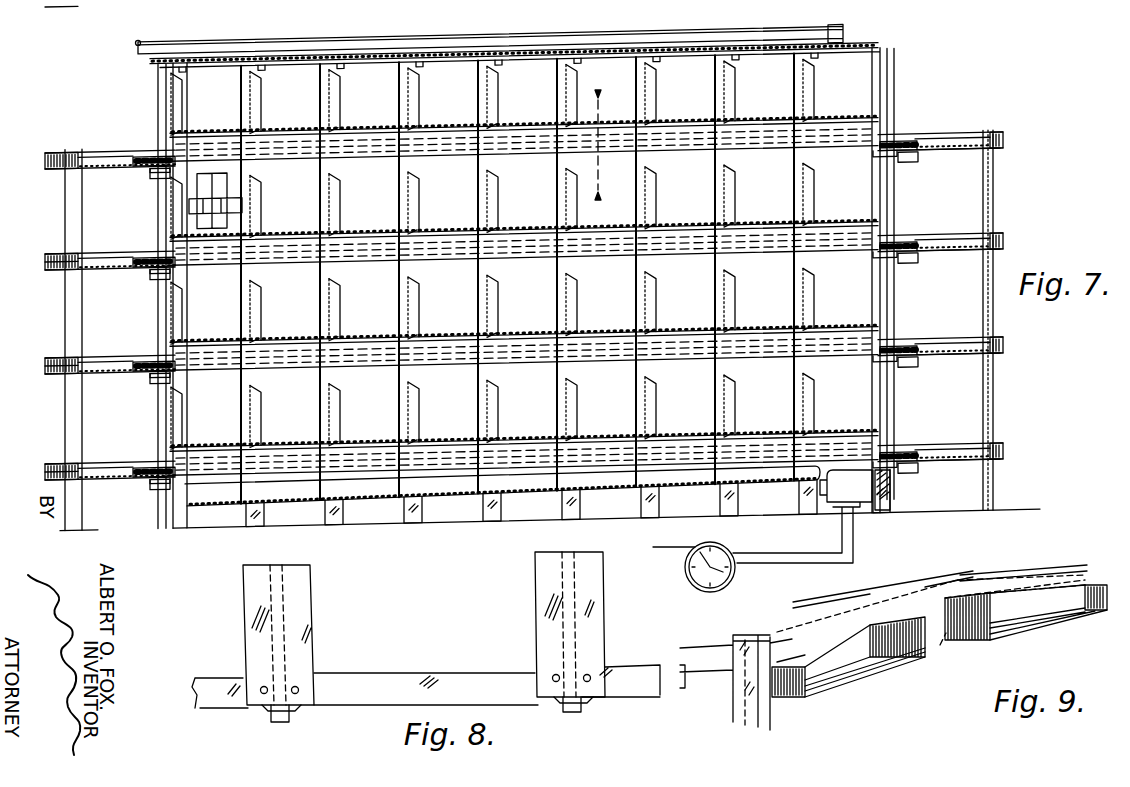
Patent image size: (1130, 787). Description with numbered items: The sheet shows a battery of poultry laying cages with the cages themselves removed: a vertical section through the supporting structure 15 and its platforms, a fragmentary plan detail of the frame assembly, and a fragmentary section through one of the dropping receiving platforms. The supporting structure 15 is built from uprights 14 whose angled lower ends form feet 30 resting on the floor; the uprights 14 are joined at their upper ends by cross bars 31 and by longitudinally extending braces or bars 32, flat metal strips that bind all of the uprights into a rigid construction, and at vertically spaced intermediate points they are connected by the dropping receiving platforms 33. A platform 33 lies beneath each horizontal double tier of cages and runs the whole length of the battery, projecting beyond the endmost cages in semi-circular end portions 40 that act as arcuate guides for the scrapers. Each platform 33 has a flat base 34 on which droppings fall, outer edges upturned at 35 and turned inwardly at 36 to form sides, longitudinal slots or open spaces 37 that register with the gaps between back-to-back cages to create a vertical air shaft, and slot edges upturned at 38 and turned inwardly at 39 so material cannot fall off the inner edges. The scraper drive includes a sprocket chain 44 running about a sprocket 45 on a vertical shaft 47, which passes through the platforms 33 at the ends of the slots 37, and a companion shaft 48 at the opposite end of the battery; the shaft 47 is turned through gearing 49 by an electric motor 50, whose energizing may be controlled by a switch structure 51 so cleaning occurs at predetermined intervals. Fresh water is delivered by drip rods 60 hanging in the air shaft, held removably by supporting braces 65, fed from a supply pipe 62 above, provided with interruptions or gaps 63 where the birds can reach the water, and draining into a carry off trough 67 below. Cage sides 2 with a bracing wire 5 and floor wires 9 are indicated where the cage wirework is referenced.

In FIG. 7, the sides 2 is at (345, 425).
In FIG. 7, the bracing wire 5 is at (792, 96).
In FIG. 7, the spaced wires 9 is at (597, 143).
In FIG. 7, the uprights 14 is at (416, 160).
In FIG. 8, the uprights 14 is at (292, 716).
In FIG. 9, the uprights 14 is at (740, 712).
In FIG. 7, the supporting structure 15 is at (408, 518).
In FIG. 8, the supporting structure 15 is at (326, 641).
In FIG. 7, the feet 30 is at (96, 532).
In FIG. 8, the cross bars 31 is at (306, 602).
In FIG. 7, the longitudinally extending braces or bars 32 is at (228, 66).
In FIG. 8, the longitudinally extending braces or bars 32 is at (393, 678).
In FIG. 7, the dropping receiving platforms 33 is at (528, 152).
In FIG. 9, the dropping receiving platforms 33 is at (870, 696).
In FIG. 9, the flat base 34 is at (855, 685).
In FIG. 7, the upturned outer edges 35 is at (966, 134).
In FIG. 9, the upturned outer edges 35 is at (790, 697).
In FIG. 7, the inwardly turned portions 36 is at (938, 132).
In FIG. 9, the inwardly turned portions 36 is at (830, 680).
In FIG. 9, the slots or open spaces 37 is at (944, 652).
In FIG. 7, the upturned slot edges 38 is at (525, 264).
In FIG. 9, the upturned slot edges 38 is at (912, 660).
In FIG. 7, the inwardly turned slot edge portions 39 is at (950, 440).
In FIG. 9, the inwardly turned slot edge portions 39 is at (840, 602).
In FIG. 7, the end portions 40 is at (943, 148).
In FIG. 7, the sprocket chain 44 is at (914, 254).
In FIG. 7, the sprocket 45 is at (905, 236).
In FIG. 7, the vertical shaft 47 is at (895, 412).
In FIG. 7, the vertical shaft 48 is at (165, 410).
In FIG. 7, the gearing 49 is at (905, 486).
In FIG. 7, the electric motor 50 is at (862, 498).
In FIG. 7, the switch structure 51 is at (737, 578).
In FIG. 7, the drip rods 60 is at (655, 96).
In FIG. 7, the supply pipe 62 is at (630, 38).
In FIG. 7, the interruptions or gaps 63 is at (582, 272).
In FIG. 7, the supporting braces 65 is at (808, 168).
In FIG. 7, the carry off trough 67 is at (446, 530).